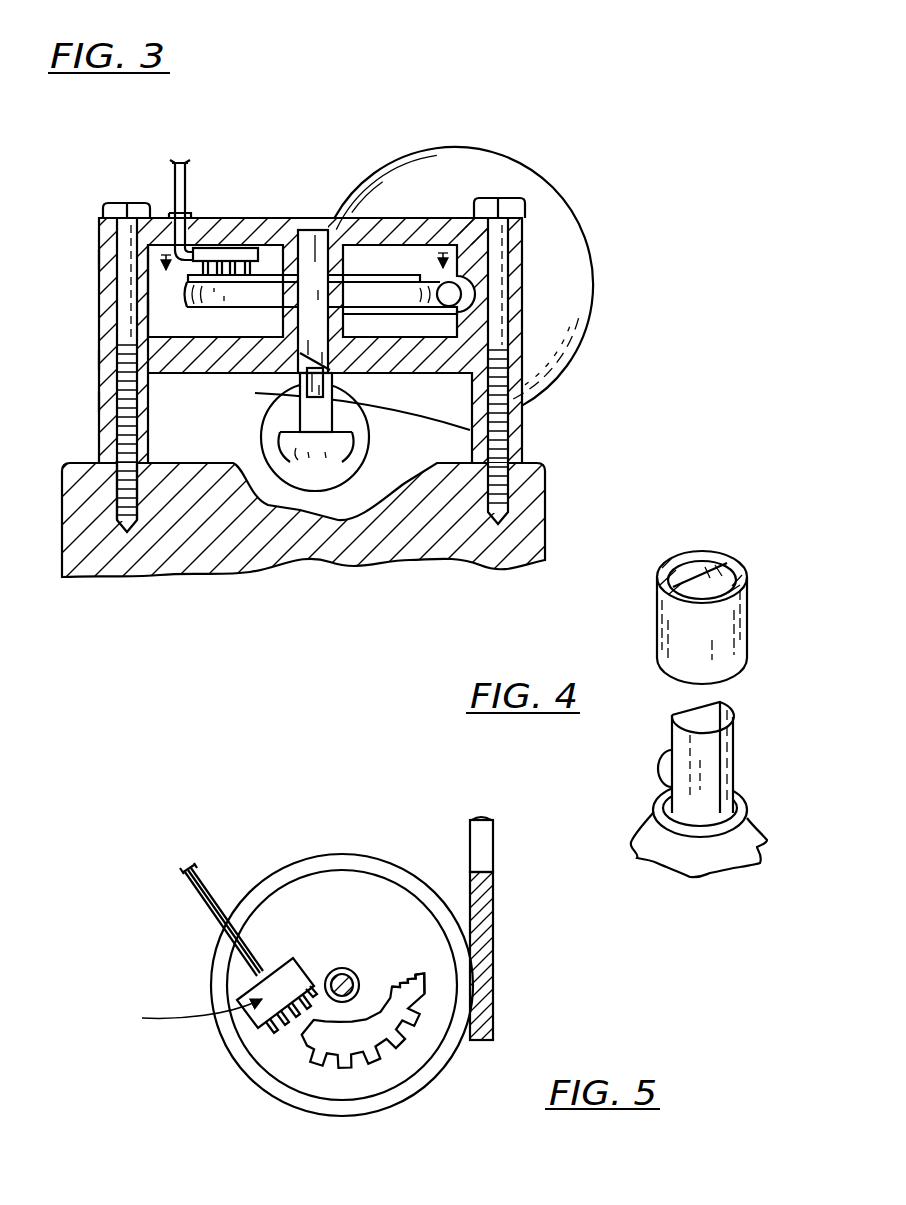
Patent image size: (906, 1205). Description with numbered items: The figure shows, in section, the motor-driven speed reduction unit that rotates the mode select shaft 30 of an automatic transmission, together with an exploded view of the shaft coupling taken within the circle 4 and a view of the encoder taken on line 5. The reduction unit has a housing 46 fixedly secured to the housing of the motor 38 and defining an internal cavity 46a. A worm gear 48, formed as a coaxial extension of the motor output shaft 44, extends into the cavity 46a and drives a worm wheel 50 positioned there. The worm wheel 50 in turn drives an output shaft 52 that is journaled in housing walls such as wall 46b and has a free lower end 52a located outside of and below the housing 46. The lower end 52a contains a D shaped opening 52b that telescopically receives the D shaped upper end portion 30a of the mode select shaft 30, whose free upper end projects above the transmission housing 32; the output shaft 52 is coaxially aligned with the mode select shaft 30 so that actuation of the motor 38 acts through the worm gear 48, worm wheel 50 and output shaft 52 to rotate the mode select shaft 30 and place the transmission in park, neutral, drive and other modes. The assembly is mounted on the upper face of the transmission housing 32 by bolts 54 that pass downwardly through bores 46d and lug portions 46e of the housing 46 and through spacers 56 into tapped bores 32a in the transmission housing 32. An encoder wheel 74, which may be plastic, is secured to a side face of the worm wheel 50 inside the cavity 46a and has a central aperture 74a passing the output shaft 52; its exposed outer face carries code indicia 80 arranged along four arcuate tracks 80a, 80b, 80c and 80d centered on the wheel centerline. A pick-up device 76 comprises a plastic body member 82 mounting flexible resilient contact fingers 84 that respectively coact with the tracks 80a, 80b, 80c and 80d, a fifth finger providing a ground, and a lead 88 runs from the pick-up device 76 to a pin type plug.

In FIG. 3, the circle 4 is at (262, 447).
In FIG. 3, the line 5- 5 is at (303, 274).
In FIG. 4, the mode select shaft 30 is at (668, 790).
In FIG. 4, the D shaped upper end portion 30a is at (734, 760).
In FIG. 3, the transmission housing 32 is at (540, 456).
In FIG. 4, the transmission housing 32 is at (745, 840).
In FIG. 3, the tapped bores 32a is at (117, 492).
In FIG. 3, the motor 38 is at (556, 170).
In FIG. 5, the output shaft 44 is at (494, 858).
In FIG. 3, the housing 46 is at (285, 212).
In FIG. 3, the internal cavity 46a is at (150, 306).
In FIG. 3, the housing wall 46b is at (303, 218).
In FIG. 3, the bores 46d is at (118, 258).
In FIG. 3, the lug portions 46e is at (100, 360).
In FIG. 3, the worm gear 48 is at (452, 294).
In FIG. 5, the worm gear 48 is at (495, 978).
In FIG. 3, the worm wheel 50 is at (254, 300).
In FIG. 5, the worm wheel 50 is at (412, 1097).
In FIG. 3, the output shaft 52 is at (314, 322).
In FIG. 5, the output shaft 52 is at (336, 968).
In FIG. 3, the free lower end 52a is at (303, 389).
In FIG. 4, the free lower end 52a is at (660, 622).
In FIG. 4, the D shaped opening 52b is at (727, 563).
In FIG. 3, the bolts 54 is at (127, 203).
In FIG. 3, the spacers 56 is at (100, 402).
In FIG. 3, the encoder wheel 74 is at (404, 275).
In FIG. 5, the encoder wheel 74 is at (330, 888).
In FIG. 5, the central aperture 74a is at (345, 973).
In FIG. 5, the pick-up device 76 is at (189, 1016).
In FIG. 5, the code indicia 80 is at (324, 1076).
In FIG. 5, the arcuate track 80a is at (425, 973).
In FIG. 5, the arcuate track 80b is at (415, 978).
In FIG. 5, the arcuate track 80c is at (407, 981).
In FIG. 5, the arcuate track 80d is at (399, 985).
In FIG. 3, the plastic body member 82 is at (232, 247).
In FIG. 5, the plastic body member 82 is at (291, 960).
In FIG. 5, the contact fingers 84 is at (273, 1033).
In FIG. 3, the lead 88 is at (186, 185).
In FIG. 5, the lead 88 is at (207, 906).